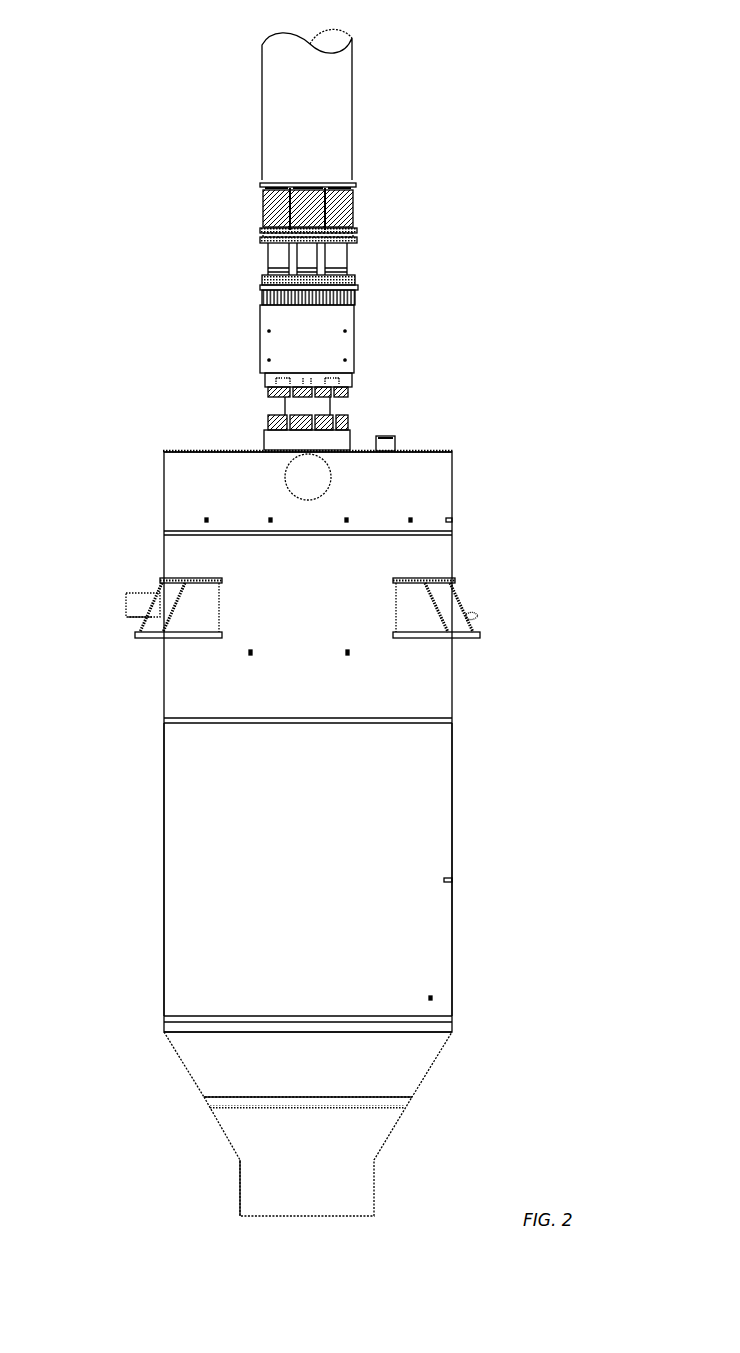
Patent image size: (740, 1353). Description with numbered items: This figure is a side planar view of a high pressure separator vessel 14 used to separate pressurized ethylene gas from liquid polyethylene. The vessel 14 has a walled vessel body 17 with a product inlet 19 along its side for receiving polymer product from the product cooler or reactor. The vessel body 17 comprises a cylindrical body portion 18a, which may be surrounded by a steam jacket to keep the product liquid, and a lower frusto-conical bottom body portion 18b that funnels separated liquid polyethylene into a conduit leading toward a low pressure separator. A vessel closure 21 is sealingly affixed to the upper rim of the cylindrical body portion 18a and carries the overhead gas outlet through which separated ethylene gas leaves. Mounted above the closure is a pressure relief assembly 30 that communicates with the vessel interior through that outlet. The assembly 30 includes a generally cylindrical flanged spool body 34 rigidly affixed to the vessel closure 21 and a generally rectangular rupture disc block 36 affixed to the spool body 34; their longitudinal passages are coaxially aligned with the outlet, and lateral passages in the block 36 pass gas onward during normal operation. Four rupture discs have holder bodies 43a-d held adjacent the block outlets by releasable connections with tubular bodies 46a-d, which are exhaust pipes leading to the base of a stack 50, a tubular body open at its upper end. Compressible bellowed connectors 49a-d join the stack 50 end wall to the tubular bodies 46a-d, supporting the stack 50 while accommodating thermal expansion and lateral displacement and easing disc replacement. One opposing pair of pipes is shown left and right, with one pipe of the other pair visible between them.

The high pressure separator vessel 14 is at (125, 829).
The walled vessel body 17 is at (167, 697).
The cylindrical body portion 18a is at (440, 760).
The lower frusto-conical bottom body portion 18b is at (440, 1057).
The product inlet 19 is at (128, 605).
The vessel closure 21 is at (175, 489).
The pressure relief assembly 30 is at (381, 298).
The flanged spool body 34 is at (285, 410).
The rupture disc block 36 is at (268, 342).
The holder bodies 43a-d is at (262, 298).
The tubular bodies 46a-d is at (262, 260).
The compressible bellowed connectors 49a-d is at (260, 208).
The stack 50 is at (275, 108).